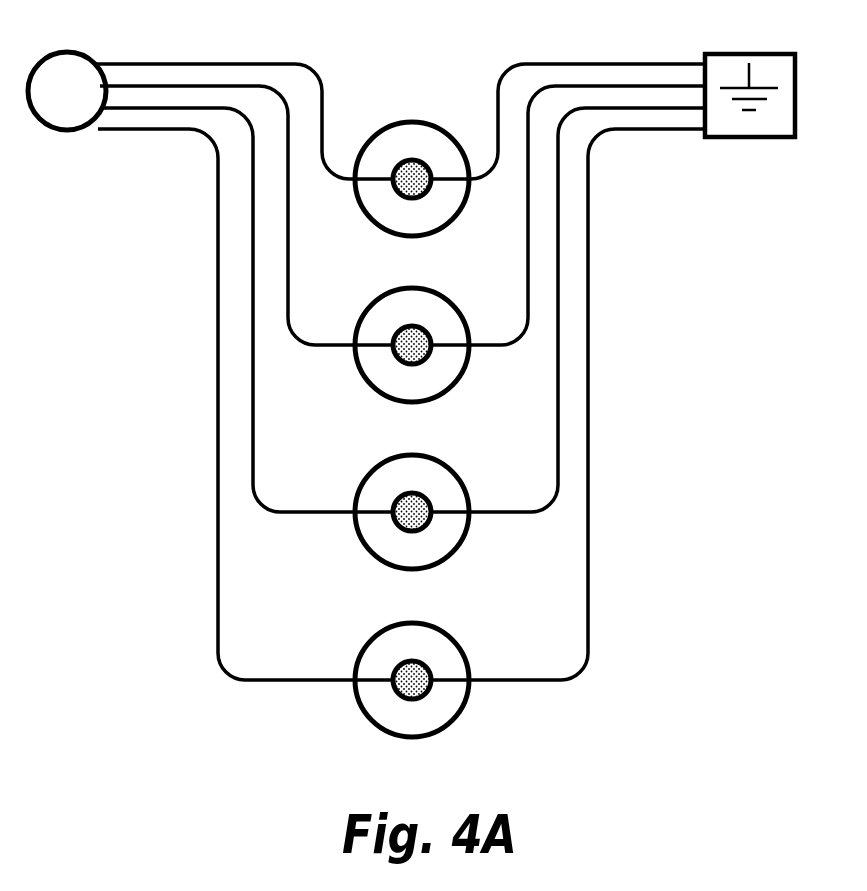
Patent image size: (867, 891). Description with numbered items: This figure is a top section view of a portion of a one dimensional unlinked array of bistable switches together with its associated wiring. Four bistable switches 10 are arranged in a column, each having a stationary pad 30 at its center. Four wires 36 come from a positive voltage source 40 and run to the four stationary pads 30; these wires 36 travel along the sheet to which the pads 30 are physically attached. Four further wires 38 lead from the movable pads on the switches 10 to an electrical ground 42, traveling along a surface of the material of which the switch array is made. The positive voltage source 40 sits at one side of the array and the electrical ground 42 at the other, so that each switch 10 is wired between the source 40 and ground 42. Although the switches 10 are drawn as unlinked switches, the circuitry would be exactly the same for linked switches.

The bistable switch 10 is at (355, 190).
The stationary pad 30 is at (413, 202).
The wire 36 is at (322, 130).
The wire 38 is at (498, 147).
The positive voltage source 40 is at (58, 133).
The electrical ground 42 is at (758, 137).